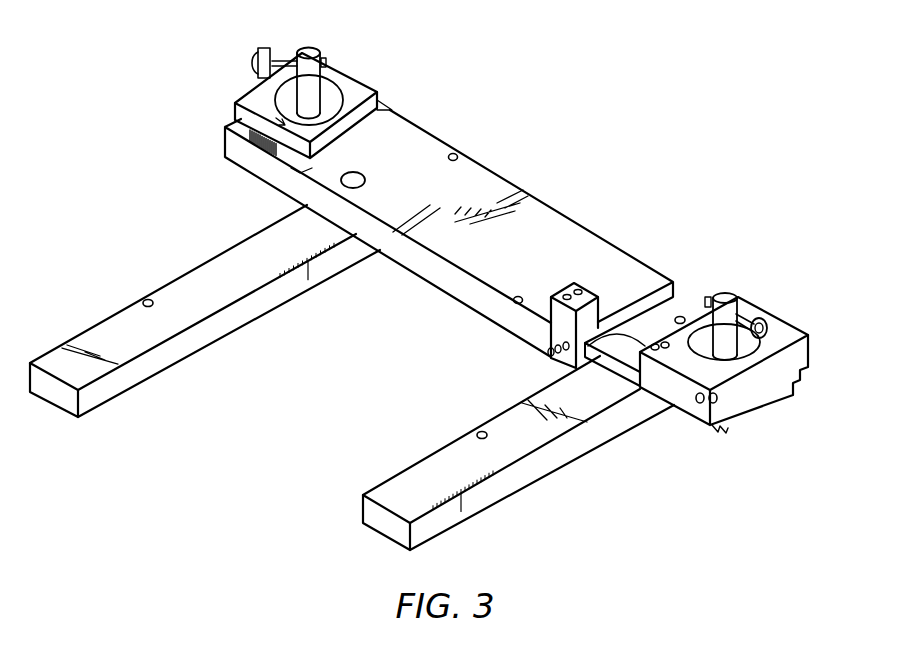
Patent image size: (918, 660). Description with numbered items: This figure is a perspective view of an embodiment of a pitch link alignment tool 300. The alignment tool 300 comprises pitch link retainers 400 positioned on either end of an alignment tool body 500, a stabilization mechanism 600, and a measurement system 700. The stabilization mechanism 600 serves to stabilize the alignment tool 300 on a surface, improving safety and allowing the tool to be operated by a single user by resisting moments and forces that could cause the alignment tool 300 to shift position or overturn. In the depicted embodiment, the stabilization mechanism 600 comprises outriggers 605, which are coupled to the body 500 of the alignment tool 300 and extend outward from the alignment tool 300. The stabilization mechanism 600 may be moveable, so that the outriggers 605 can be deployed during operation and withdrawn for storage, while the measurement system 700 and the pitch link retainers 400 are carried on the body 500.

The alignment tool 300 is at (146, 172).
The pitch link retainer 400 is at (338, 73).
The alignment tool body 500 is at (555, 205).
The stabilization mechanism 600 is at (213, 328).
The outrigger 605 is at (120, 378).
The measurement system 700 is at (563, 287).